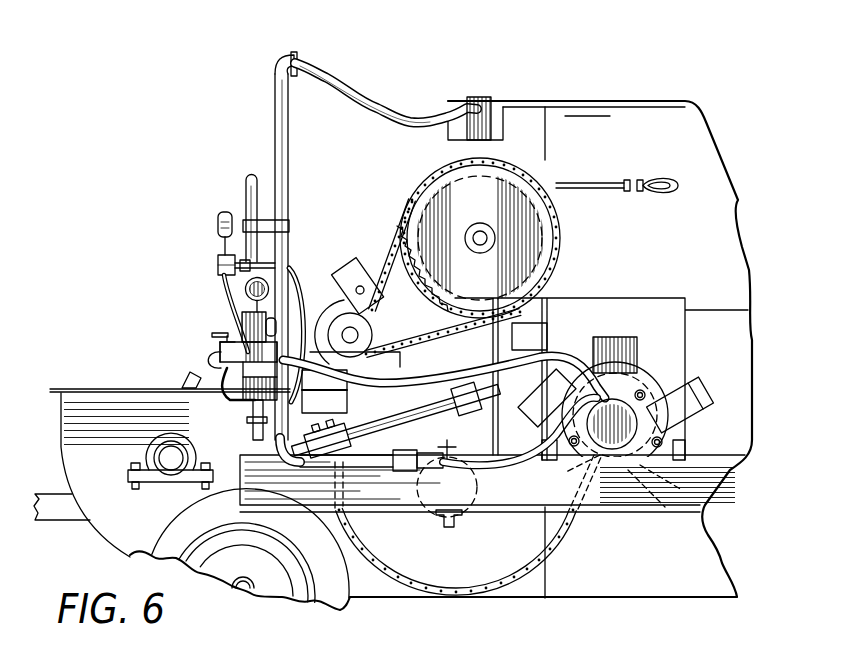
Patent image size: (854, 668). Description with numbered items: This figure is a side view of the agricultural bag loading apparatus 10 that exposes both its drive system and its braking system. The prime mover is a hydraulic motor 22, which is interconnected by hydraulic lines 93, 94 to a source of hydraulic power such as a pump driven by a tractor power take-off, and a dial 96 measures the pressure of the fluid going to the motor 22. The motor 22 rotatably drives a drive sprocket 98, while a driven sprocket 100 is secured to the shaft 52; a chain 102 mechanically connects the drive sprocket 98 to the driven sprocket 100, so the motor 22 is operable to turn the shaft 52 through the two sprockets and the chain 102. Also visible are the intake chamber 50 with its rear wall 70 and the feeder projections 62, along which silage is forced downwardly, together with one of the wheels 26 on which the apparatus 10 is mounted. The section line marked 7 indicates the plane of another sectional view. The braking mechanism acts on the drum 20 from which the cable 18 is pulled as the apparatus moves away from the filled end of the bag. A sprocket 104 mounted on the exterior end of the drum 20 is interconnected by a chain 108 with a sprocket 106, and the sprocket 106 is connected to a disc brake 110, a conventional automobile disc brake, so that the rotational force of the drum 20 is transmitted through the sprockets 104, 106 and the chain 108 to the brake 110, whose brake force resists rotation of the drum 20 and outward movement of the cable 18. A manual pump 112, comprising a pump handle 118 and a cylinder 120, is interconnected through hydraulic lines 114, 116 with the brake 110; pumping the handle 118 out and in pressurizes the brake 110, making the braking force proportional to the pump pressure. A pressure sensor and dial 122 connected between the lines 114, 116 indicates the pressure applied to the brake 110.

The loading apparatus 10 is at (606, 80).
The cable 18 is at (603, 181).
The drum 20 is at (520, 170).
The hydraulic motor 22 is at (686, 390).
The wheel 26 is at (344, 610).
The intake chamber 50 is at (96, 372).
The shaft 52 is at (422, 515).
The feeder projections 62 is at (180, 375).
The rear wall 70 is at (61, 436).
The section line 7- 7 is at (366, 509).
The hydraulic line 93 is at (565, 360).
The hydraulic line 94 is at (502, 467).
The dial 96 is at (248, 298).
The drive sprocket 98 is at (595, 498).
The driven sprocket 100 is at (549, 543).
The chain 102 is at (520, 578).
The sprocket 104 is at (386, 238).
The sprocket 106 is at (428, 282).
The chain 108 is at (427, 183).
The disc brake 110 is at (330, 298).
The manual pump 112 is at (392, 442).
The hydraulic line 114 is at (300, 278).
The hydraulic line 116 is at (224, 292).
The pump handle 118 is at (494, 412).
The cylinder 120 is at (412, 406).
The pressure sensor and dial 122 is at (208, 246).